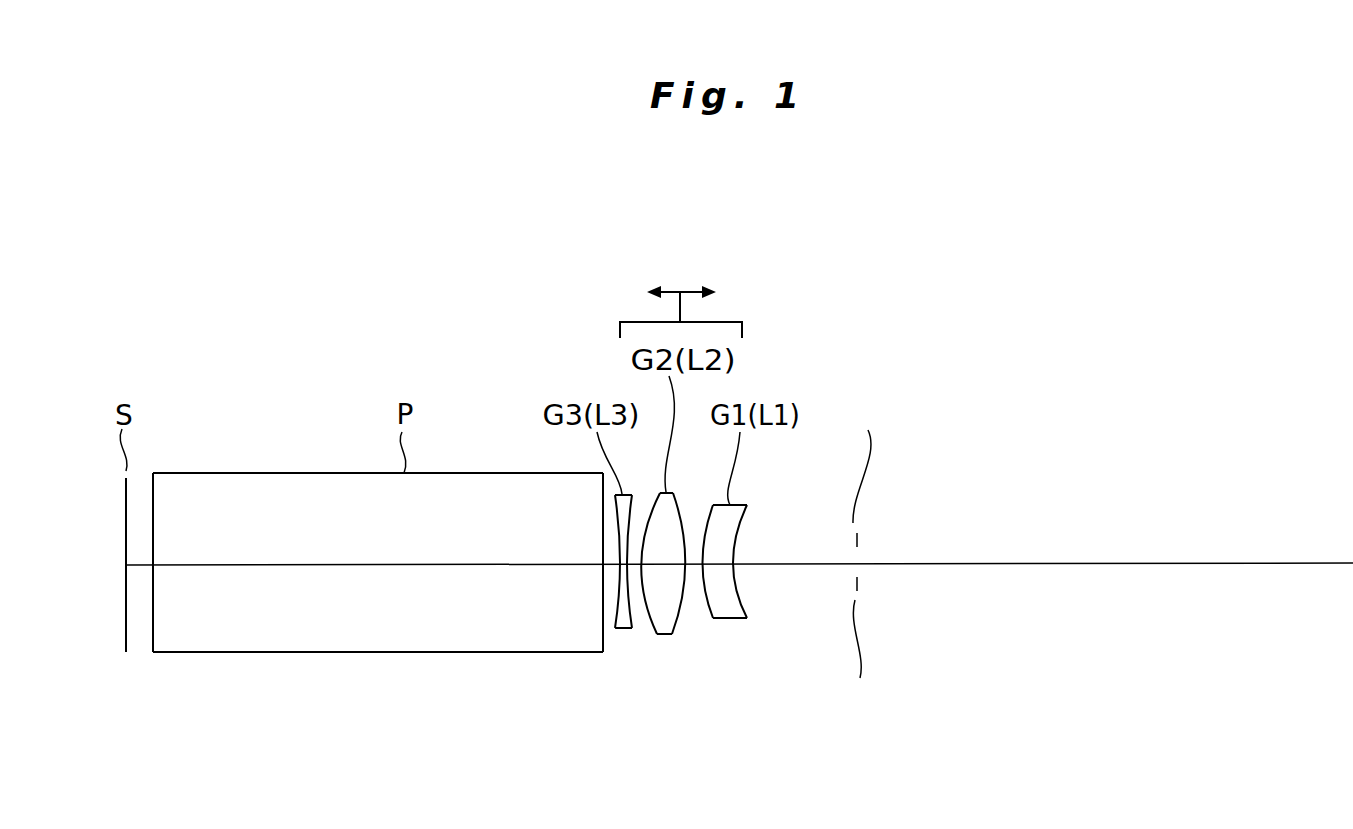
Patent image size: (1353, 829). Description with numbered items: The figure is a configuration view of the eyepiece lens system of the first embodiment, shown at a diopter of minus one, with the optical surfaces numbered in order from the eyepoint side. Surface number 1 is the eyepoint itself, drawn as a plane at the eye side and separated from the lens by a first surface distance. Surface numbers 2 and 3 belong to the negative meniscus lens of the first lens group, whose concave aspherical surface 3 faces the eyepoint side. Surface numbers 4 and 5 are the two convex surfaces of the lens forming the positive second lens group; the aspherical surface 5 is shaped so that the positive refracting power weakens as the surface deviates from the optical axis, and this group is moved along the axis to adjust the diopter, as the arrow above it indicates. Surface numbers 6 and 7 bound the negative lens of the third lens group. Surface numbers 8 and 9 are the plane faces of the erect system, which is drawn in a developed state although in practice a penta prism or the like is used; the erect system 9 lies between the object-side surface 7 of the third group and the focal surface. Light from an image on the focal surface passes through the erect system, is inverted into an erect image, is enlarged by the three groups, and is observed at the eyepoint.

The surface number 1 (eyepoint E.P) 1 is at (872, 559).
The surface number 2 is at (742, 603).
The surface number 3 (aspherical) 3 is at (706, 616).
The surface number 4 is at (681, 617).
The surface number 5 (aspherical) 5 is at (682, 622).
The surface number 6 is at (654, 623).
The surface number 7 is at (631, 623).
The surface number 8 is at (617, 623).
The erect system (surface number 9) 9 is at (152, 637).